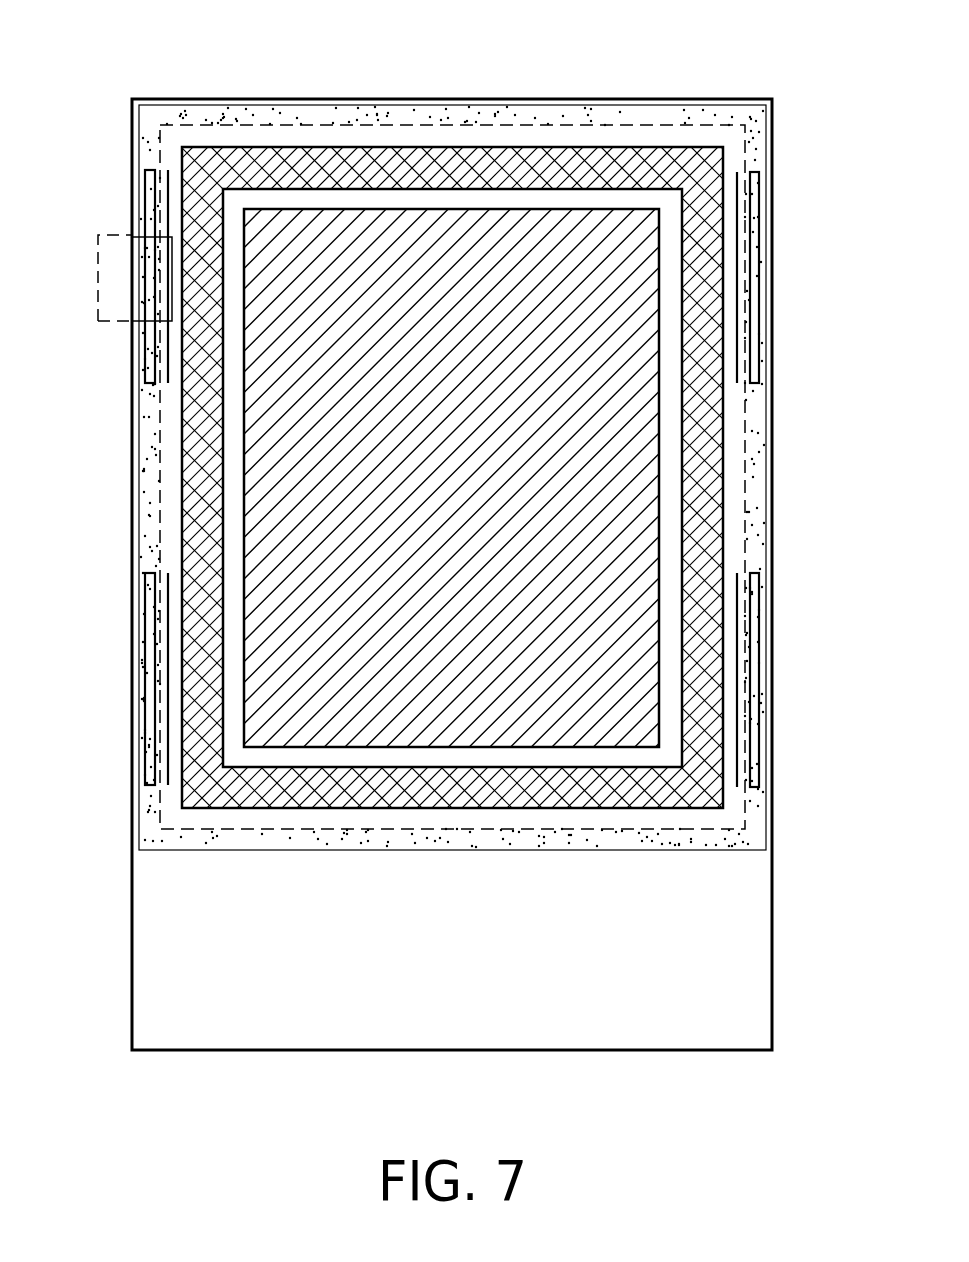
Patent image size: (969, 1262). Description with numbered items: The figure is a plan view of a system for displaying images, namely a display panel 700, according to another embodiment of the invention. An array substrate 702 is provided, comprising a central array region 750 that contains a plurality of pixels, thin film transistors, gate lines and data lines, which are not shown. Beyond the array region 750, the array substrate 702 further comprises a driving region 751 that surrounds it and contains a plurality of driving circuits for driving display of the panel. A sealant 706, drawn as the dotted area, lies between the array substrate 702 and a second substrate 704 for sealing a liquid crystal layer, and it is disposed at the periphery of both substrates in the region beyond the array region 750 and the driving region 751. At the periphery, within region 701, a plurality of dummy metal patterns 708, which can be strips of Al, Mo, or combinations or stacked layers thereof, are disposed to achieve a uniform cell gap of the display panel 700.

The display panel 700 is at (785, 88).
The region 701 is at (98, 235).
The array substrate 702 is at (733, 1002).
The second substrate 704 is at (712, 852).
The sealant 706 is at (755, 422).
The dummy metal patterns 708 is at (143, 182).
The array region 750 is at (630, 535).
The driving region 751 is at (700, 458).